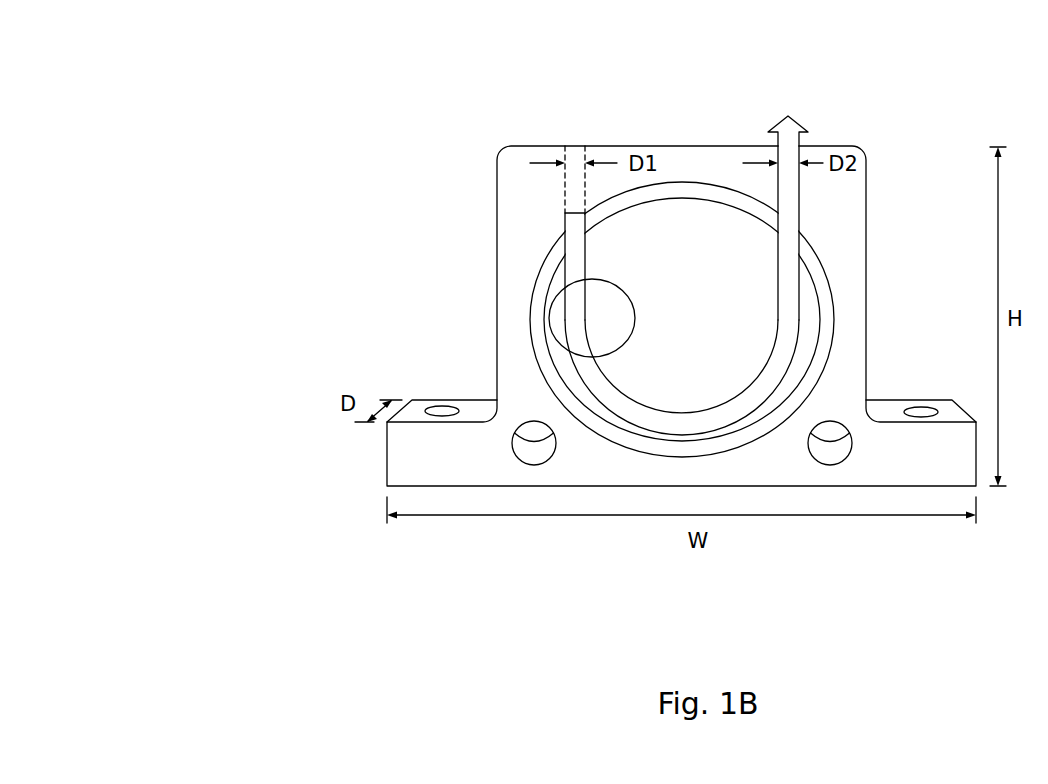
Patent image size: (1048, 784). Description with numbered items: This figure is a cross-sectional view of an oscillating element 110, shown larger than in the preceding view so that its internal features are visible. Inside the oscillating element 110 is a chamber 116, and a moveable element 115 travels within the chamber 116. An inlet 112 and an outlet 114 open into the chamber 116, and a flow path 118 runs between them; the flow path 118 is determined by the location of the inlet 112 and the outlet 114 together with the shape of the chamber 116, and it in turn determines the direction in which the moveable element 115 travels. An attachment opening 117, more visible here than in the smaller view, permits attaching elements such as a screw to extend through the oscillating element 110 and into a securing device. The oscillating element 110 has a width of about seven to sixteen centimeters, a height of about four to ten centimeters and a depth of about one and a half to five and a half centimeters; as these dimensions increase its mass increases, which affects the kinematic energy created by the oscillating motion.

The oscillating element 110 is at (284, 104).
The inlet 112 is at (578, 145).
The outlet 114 is at (787, 147).
The moveable element 115 is at (605, 316).
The chamber 116 is at (732, 302).
The attachment opening 117 is at (443, 408).
The flow path 118 is at (645, 418).